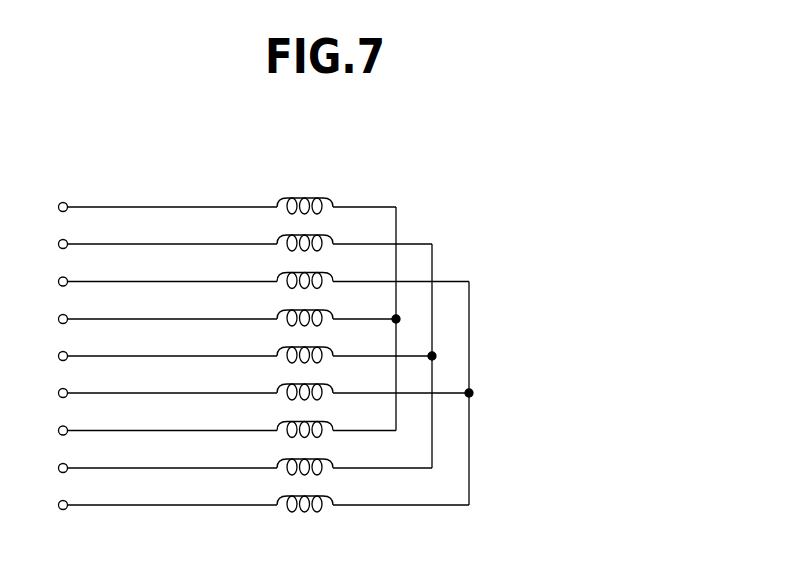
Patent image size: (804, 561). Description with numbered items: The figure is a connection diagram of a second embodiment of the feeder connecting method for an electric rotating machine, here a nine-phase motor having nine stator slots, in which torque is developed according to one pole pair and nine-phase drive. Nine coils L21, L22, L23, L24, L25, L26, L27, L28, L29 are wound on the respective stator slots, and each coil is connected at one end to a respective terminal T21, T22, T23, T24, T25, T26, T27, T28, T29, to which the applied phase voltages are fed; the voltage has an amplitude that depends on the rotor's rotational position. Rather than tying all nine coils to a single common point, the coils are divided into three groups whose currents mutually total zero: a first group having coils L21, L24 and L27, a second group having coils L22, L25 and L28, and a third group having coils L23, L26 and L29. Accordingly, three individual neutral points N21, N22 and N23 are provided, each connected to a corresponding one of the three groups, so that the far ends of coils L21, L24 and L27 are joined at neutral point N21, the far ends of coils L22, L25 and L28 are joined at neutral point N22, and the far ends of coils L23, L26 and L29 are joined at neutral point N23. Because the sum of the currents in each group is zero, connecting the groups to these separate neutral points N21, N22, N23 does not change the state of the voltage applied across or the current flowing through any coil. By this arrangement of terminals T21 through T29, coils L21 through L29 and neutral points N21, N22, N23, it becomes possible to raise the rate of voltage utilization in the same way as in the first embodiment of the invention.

The terminal T21 is at (149, 207).
The terminal T22 is at (149, 244).
The terminal T23 is at (149, 282).
The terminal T24 is at (149, 319).
The terminal T25 is at (149, 356).
The terminal T26 is at (149, 393).
The terminal T27 is at (149, 431).
The terminal T28 is at (149, 468).
The terminal T29 is at (149, 505).
The coil L21 is at (336, 198).
The coil L22 is at (354, 235).
The coil L23 is at (373, 273).
The coil L24 is at (336, 310).
The coil L25 is at (354, 347).
The coil L26 is at (373, 384).
The coil L27 is at (336, 422).
The coil L28 is at (354, 459).
The coil L29 is at (373, 496).
The neutral point N21 is at (403, 212).
The neutral point N22 is at (439, 262).
The neutral point N23 is at (477, 349).